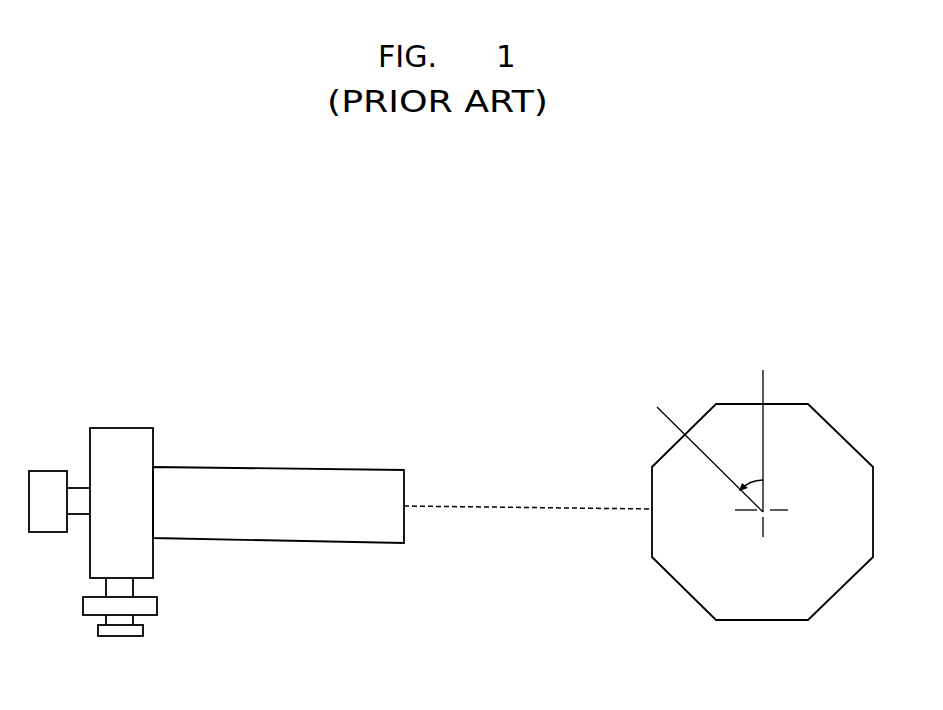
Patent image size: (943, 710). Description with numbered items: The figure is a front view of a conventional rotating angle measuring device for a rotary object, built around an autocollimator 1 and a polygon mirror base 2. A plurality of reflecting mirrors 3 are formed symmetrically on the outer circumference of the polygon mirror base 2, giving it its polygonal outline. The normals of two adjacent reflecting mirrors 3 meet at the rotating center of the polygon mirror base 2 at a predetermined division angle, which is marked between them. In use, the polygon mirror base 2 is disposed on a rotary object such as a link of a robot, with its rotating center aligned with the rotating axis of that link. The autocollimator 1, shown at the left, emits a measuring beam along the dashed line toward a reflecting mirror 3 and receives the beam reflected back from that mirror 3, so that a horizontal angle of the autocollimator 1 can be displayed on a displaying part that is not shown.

The autocollimator 1 is at (296, 462).
The polygon mirror base 2 is at (845, 423).
The reflecting mirror 3 is at (787, 404).